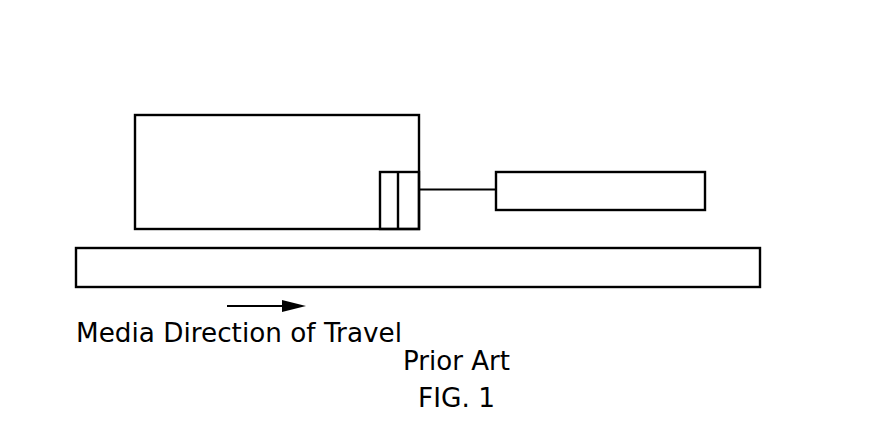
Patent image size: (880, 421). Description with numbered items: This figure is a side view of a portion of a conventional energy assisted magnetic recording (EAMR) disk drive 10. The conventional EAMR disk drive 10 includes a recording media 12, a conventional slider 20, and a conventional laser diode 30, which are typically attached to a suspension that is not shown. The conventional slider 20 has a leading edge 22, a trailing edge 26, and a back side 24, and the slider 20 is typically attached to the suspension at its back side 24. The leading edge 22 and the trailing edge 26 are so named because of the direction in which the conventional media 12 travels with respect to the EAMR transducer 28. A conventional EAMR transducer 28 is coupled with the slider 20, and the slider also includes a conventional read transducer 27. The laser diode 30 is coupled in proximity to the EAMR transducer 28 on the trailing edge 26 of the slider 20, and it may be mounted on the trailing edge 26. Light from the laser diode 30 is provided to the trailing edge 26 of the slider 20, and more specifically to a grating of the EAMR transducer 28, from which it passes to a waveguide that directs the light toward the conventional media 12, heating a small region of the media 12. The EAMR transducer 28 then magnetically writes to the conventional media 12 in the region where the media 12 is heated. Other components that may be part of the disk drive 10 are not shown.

The conventional energy assisted magnetic recording (EAMR) disk drive 10 is at (474, 34).
The recording media 12 is at (760, 266).
The conventional slider 20 is at (133, 153).
The leading edge 22 is at (87, 181).
The back side 24 is at (248, 96).
The trailing edge 26 is at (424, 132).
The conventional read transducer 27 is at (390, 172).
The conventional EAMR transducer 28 is at (420, 180).
The conventional laser diode 30 is at (705, 190).